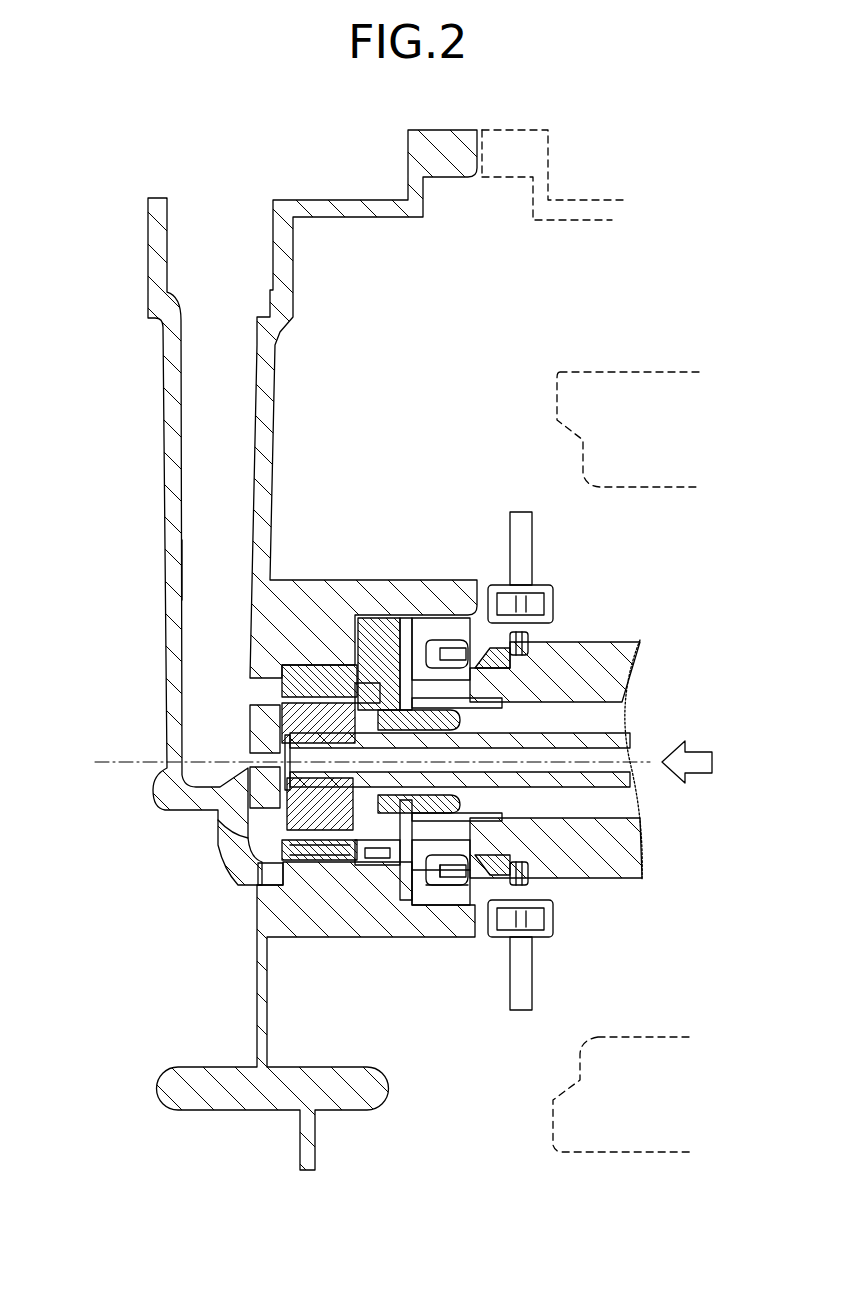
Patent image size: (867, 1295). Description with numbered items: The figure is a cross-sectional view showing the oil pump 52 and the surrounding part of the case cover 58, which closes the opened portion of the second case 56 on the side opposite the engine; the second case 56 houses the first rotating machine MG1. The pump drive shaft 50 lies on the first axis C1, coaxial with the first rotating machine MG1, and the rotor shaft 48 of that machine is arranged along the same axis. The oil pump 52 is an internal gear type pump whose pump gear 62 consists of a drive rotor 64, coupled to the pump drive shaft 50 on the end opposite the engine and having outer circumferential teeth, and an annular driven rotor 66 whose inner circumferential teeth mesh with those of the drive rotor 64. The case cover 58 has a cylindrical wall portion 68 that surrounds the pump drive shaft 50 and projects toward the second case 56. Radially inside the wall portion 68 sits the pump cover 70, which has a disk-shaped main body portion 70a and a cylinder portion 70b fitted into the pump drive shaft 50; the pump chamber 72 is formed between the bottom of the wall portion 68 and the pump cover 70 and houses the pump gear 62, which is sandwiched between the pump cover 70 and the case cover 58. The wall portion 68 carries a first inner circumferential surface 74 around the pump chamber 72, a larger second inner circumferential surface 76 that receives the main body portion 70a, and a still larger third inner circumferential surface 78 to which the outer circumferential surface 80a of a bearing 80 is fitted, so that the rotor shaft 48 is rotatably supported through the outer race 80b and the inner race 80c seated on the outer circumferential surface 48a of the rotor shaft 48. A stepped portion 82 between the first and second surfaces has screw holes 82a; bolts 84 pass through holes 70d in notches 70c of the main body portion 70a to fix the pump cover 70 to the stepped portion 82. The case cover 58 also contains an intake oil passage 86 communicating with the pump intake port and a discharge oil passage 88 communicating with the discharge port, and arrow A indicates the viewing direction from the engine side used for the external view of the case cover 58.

The rotor shaft 48 is at (605, 678).
The outer circumferential surface 48a is at (482, 868).
The pump drive shaft 50 is at (608, 746).
The oil pump 52 is at (326, 578).
The second case 56 is at (568, 210).
The case cover 58 is at (130, 410).
The pump gear 62 is at (221, 749).
The drive rotor 64 is at (312, 704).
The driven rotor 66 is at (312, 680).
The wall portion 68 is at (340, 665).
The pump cover 70 is at (470, 798).
The main body portion 70a is at (406, 650).
The cylinder portion 70b is at (462, 705).
The notches 70c is at (406, 900).
The holes 70d is at (398, 862).
The pump chamber 72 is at (250, 862).
The first inner circumferential surface 74 is at (320, 668).
The second inner circumferential surface 76 is at (384, 640).
The third inner circumferential surface 78 is at (440, 630).
The bearing 80 is at (455, 905).
The outer circumferential surface 80a is at (426, 906).
The outer race 80b is at (440, 908).
The inner race 80c is at (447, 908).
The stepped portion 82 is at (368, 866).
The screw holes 82a is at (328, 862).
The bolts 84 is at (306, 862).
The intake oil passage 86 is at (235, 826).
The discharge oil passage 88 is at (183, 575).
The arrow A is at (687, 758).
The first axis C1 is at (113, 748).
The first rotating machine MG1 is at (580, 372).